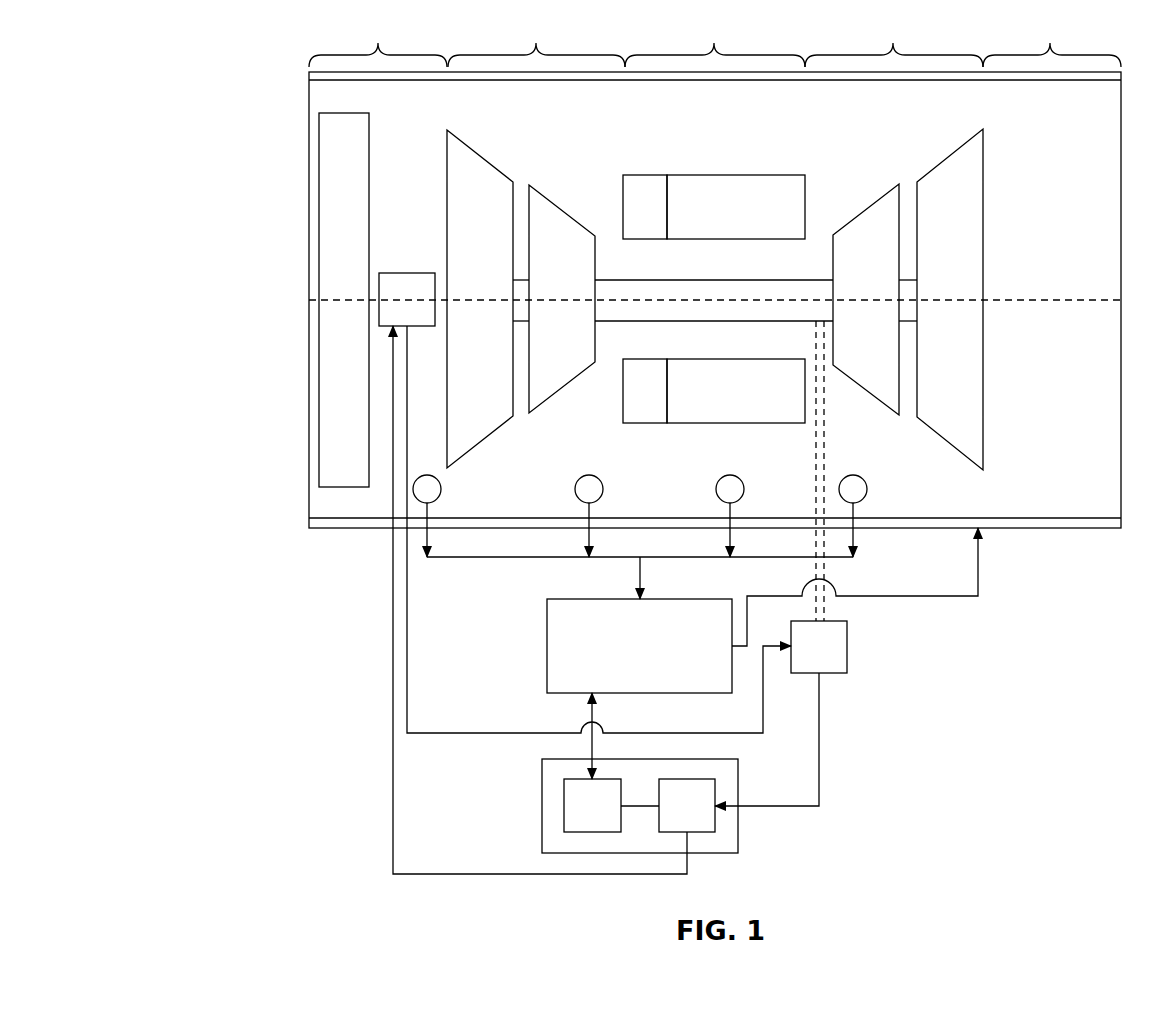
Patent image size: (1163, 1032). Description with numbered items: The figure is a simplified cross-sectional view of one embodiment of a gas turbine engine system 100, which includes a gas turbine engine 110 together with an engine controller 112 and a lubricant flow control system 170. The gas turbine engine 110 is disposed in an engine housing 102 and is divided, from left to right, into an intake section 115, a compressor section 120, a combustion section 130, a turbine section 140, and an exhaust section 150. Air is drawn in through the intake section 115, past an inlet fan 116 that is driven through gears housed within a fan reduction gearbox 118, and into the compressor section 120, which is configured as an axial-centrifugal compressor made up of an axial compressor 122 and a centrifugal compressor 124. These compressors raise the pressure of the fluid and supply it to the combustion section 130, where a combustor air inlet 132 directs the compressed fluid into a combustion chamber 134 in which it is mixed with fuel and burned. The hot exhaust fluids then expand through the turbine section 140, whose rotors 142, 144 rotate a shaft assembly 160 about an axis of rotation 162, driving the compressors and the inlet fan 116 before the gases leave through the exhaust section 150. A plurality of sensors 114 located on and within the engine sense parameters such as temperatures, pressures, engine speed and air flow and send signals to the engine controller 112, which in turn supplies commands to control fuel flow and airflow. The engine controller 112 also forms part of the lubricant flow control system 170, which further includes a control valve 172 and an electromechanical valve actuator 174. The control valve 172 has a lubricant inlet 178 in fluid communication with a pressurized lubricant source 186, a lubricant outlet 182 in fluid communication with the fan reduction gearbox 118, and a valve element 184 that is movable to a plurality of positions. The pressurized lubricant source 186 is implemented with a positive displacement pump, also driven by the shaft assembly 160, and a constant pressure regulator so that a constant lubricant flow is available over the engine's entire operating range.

The gas turbine engine system 100 is at (267, 52).
The gas turbine engine 110 is at (1074, 552).
The engine housing 102 is at (358, 530).
The intake section 115 is at (378, 41).
The compressor section 120 is at (536, 41).
The combustion section 130 is at (715, 41).
The turbine section 140 is at (894, 41).
The exhaust section 150 is at (1052, 41).
The inlet fan 116 is at (318, 203).
The fan reduction gearbox 118 is at (412, 273).
The axis of rotation 162 is at (348, 300).
The axial compressor 122 is at (482, 447).
The centrifugal compressor 124 is at (540, 409).
The combustor air inlet 132 is at (640, 185).
The combustion chamber 134 is at (750, 185).
The shaft assembly 160 is at (722, 278).
The rotor 142 is at (870, 398).
The rotor 144 is at (950, 448).
The sensors 114 is at (441, 487).
The engine controller 112 is at (615, 598).
The pressurized lubricant source 186 is at (627, 527).
The lubricant flow control system 170 is at (851, 712).
The control valve 172 is at (542, 805).
The electromechanical valve actuator 174 is at (611, 805).
The valve element 184 is at (687, 805).
The lubricant inlet 178 is at (740, 806).
The lubricant outlet 182 is at (712, 855).